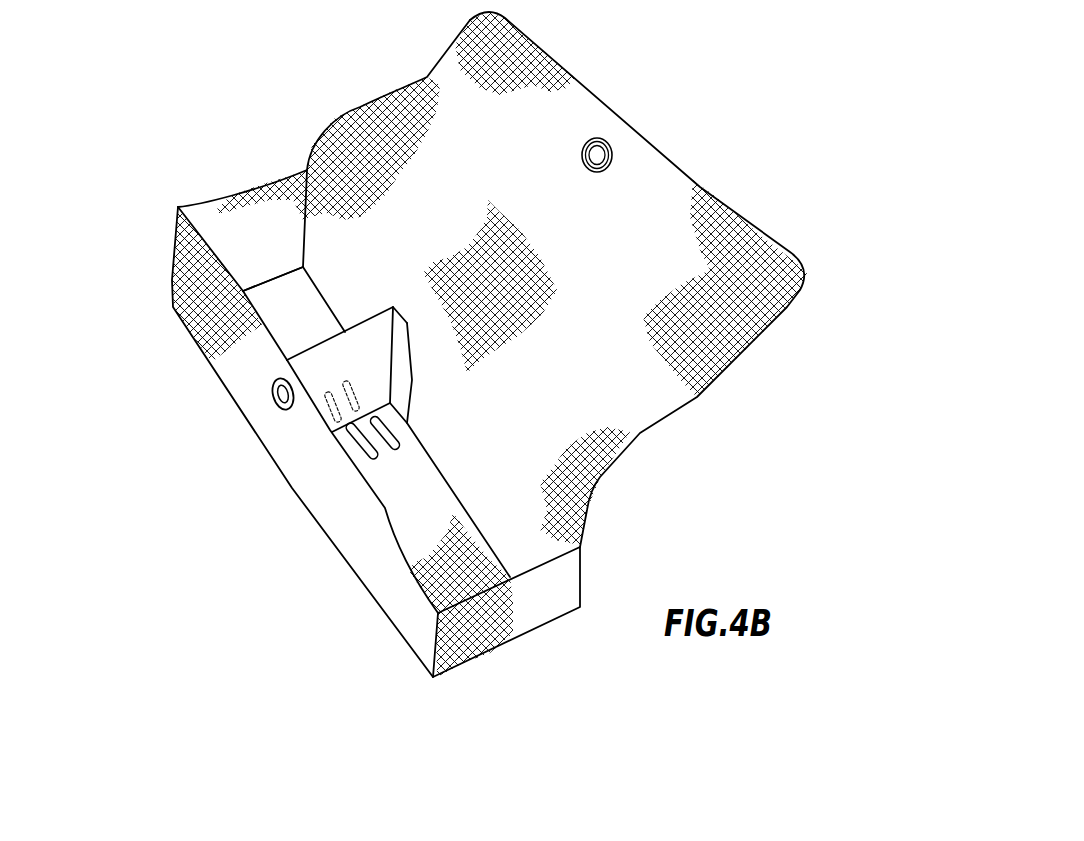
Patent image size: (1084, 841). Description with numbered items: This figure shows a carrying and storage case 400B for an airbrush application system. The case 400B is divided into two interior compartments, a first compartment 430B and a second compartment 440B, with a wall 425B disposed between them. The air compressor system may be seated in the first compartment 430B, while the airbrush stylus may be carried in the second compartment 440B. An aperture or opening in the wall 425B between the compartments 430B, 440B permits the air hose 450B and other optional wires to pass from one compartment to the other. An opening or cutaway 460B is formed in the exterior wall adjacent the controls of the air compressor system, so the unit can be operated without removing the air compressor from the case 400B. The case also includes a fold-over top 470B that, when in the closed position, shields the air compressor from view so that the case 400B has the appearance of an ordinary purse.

The case 400B is at (768, 149).
The wall 425B is at (345, 332).
The first compartment 430B is at (355, 466).
The second compartment 440B is at (183, 255).
The air hose 450B is at (403, 437).
The opening or cutaway 460B is at (417, 583).
The fold-over top 470B is at (750, 345).